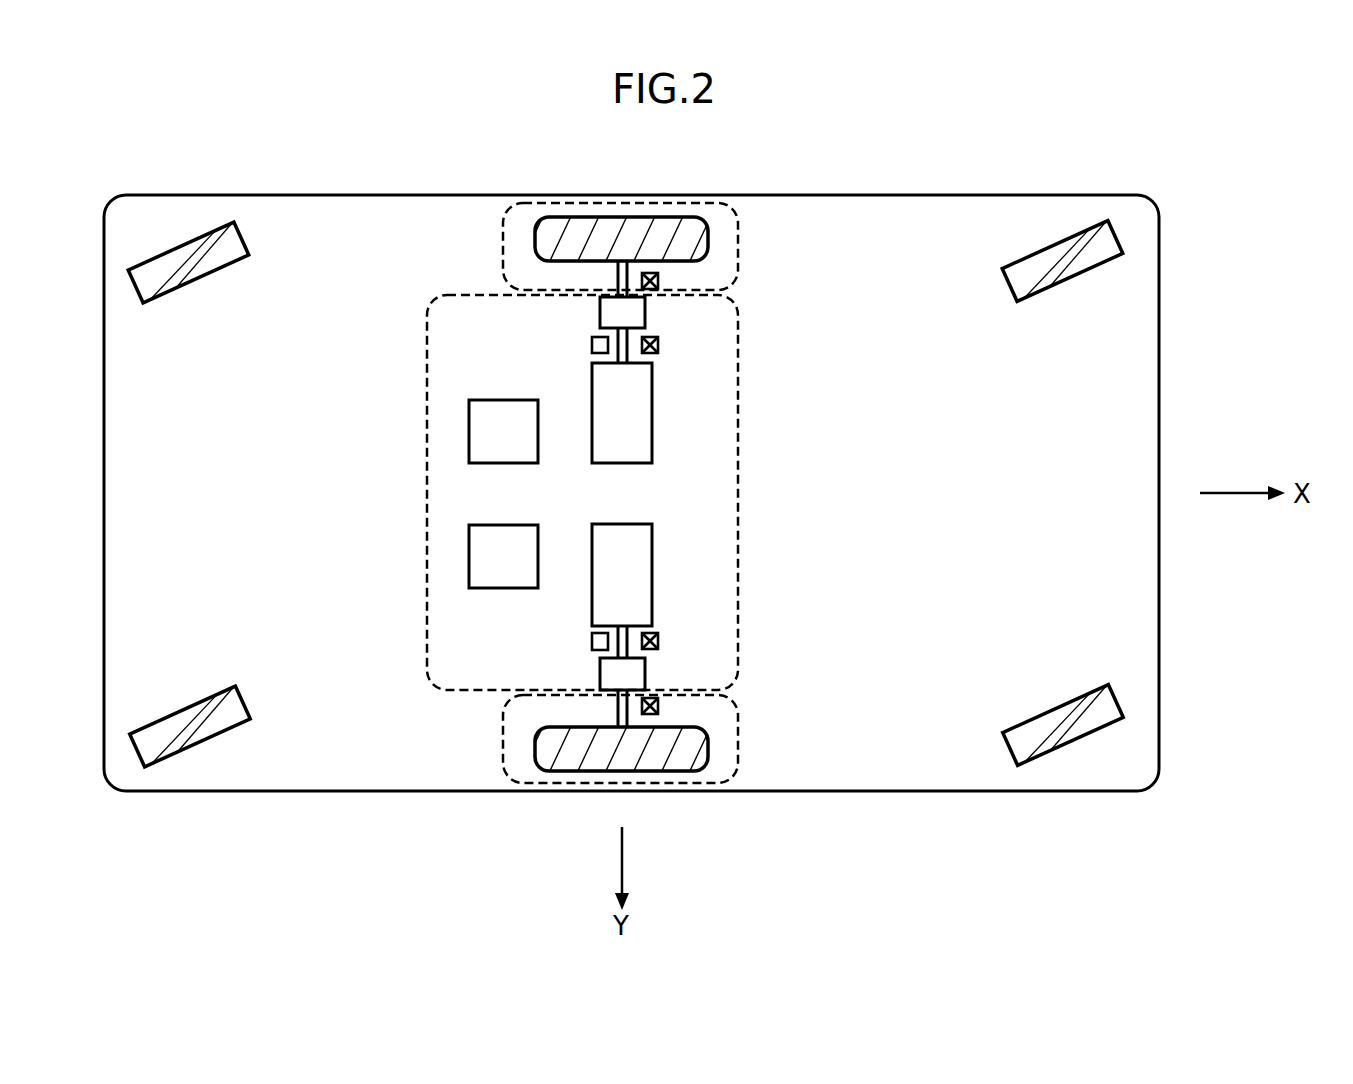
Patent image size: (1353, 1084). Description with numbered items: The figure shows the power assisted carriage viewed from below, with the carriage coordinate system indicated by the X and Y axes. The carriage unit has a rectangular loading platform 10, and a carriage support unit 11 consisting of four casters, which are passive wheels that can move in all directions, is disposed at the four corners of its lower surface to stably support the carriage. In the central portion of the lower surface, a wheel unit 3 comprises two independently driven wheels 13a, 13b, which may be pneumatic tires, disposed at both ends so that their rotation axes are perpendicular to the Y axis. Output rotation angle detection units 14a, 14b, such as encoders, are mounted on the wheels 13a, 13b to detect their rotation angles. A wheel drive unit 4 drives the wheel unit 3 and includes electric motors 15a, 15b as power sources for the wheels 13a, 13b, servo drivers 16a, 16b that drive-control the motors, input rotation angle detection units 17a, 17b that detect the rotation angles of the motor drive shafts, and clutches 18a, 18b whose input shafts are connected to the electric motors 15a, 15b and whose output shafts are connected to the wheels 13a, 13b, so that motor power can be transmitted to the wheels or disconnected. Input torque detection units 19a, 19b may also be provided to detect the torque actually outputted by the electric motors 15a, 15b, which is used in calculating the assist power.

The wheel unit 3 is at (503, 246).
The wheel drive unit 4 is at (750, 475).
The loading platform 10 is at (1128, 397).
The carriage support unit 11 is at (190, 236).
The wheel 13a is at (655, 234).
The wheel 13b is at (655, 765).
The output rotation angle detection unit 14a is at (658, 278).
The output rotation angle detection unit 14b is at (658, 706).
The electric motor 15a is at (652, 410).
The electric motor 15b is at (652, 573).
The servo driver 16a is at (469, 432).
The servo driver 16b is at (469, 558).
The input rotation angle detection unit 17a is at (658, 343).
The input rotation angle detection unit 17b is at (658, 641).
The clutch 18a is at (600, 315).
The clutch 18b is at (600, 673).
The input torque detection unit 19a is at (592, 347).
The input torque detection unit 19b is at (592, 642).